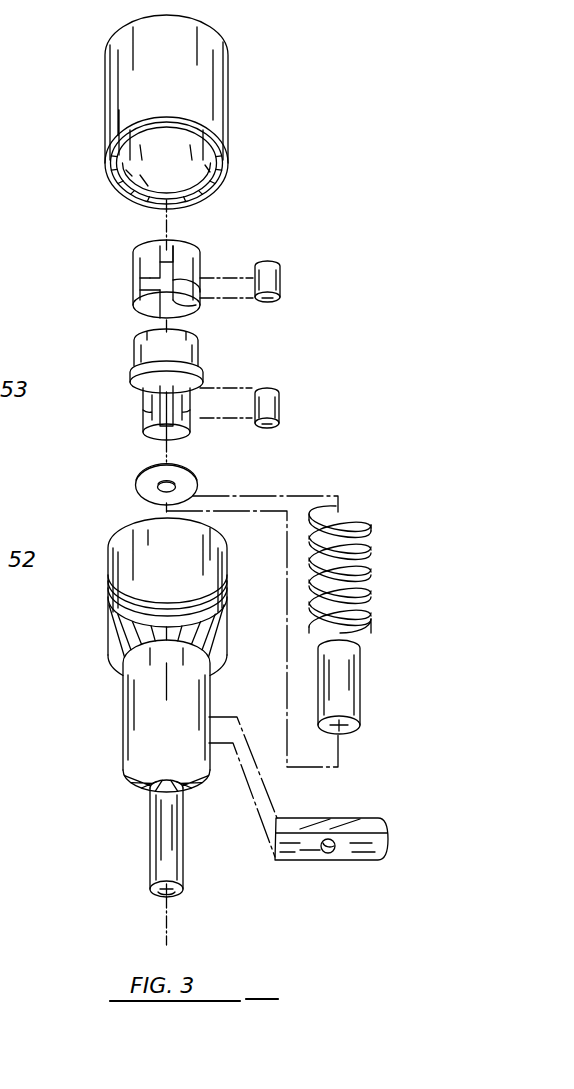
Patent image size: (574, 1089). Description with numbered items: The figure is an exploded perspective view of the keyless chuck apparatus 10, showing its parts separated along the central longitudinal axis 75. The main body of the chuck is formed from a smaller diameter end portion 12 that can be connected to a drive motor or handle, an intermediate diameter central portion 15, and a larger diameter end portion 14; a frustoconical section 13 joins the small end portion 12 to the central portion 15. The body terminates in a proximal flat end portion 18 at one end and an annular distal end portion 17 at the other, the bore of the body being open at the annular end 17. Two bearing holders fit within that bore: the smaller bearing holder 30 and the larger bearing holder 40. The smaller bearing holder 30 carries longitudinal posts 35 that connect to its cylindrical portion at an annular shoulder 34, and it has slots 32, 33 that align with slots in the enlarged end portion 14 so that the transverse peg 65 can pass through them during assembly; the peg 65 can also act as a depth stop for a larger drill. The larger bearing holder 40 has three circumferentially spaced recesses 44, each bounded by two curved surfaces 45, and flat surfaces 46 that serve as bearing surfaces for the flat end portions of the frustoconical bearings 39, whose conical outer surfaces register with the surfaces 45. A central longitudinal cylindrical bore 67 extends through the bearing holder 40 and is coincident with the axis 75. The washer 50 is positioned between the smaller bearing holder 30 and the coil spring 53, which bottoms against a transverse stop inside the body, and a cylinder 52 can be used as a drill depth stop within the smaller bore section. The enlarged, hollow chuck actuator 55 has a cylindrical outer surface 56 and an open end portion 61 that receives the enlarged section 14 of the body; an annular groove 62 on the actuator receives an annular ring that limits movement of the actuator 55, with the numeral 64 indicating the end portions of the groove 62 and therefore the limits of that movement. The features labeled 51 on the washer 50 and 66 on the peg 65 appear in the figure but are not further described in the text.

The keyless chuck apparatus 10 is at (321, 83).
The smaller diameter end portion 12 is at (162, 853).
The frustoconical section 13 is at (144, 781).
The larger diameter end portion 14 is at (167, 596).
The intermediate diameter central portion 15 is at (166, 716).
The annular distal end portion 17 is at (149, 718).
The proximal flat end portion 18 is at (174, 893).
The smaller bearing holder 30 is at (172, 396).
The slot 32 is at (133, 364).
The slot 33 is at (204, 375).
The annular shoulder 34 is at (138, 388).
The longitudinal posts 35 is at (190, 391).
The frustoconical bearing 39 is at (278, 280).
The larger bearing holder 40 is at (175, 272).
The recesses 44 is at (154, 304).
The curved surfaces 45 is at (155, 263).
The flat surfaces 46 is at (168, 250).
The washer 50 is at (174, 494).
The washer aperture 51 is at (158, 493).
The cylinder 52 is at (346, 667).
The coil spring 53 is at (356, 515).
The chuck actuator 55 is at (111, 46).
The cylindrical outer surface 56 is at (142, 96).
The open end portion 61 is at (125, 183).
The annular groove 62 is at (204, 167).
The end portions of annular groove 64 is at (176, 190).
The transverse peg 65 is at (337, 841).
The key hole 66 is at (327, 853).
The central longitudinal cylindrical bore 67 is at (180, 298).
The central longitudinal axis 75 is at (166, 922).